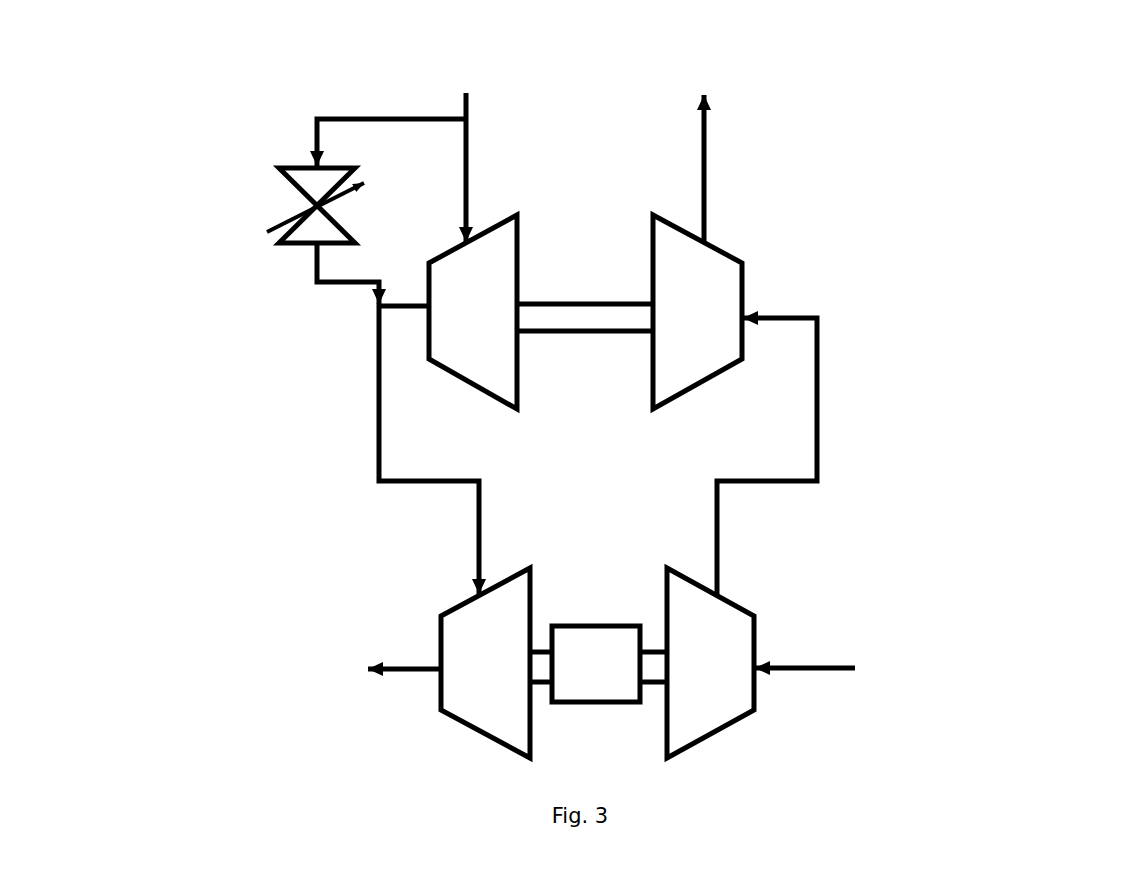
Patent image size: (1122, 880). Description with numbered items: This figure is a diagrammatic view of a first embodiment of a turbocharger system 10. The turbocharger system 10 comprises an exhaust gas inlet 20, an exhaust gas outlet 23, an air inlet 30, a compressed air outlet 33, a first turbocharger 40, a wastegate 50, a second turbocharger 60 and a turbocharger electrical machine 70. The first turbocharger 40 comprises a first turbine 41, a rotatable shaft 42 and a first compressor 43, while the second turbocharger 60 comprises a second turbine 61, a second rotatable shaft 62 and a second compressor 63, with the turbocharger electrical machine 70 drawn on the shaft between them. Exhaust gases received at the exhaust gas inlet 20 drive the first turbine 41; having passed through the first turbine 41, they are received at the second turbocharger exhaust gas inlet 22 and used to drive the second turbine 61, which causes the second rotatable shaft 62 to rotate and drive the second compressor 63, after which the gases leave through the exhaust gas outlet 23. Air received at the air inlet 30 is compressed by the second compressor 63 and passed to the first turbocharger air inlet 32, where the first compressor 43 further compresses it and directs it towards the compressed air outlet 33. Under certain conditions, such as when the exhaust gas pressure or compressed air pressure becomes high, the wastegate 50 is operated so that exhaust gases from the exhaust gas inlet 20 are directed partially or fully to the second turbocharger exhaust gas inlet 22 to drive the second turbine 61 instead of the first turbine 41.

The turbocharger system 10 is at (985, 207).
The exhaust gas inlet 20 is at (455, 143).
The second turbocharger exhaust gas inlet 22 is at (429, 450).
The exhaust gas outlet 23 is at (380, 652).
The air inlet 30 is at (828, 663).
The first turbocharger air inlet 32 is at (767, 457).
The compressed air outlet 33 is at (697, 143).
The first turbocharger 40 is at (782, 202).
The first turbine 41 is at (473, 312).
The rotatable shaft 42 is at (574, 293).
The first compressor 43 is at (697, 312).
The wastegate 50 is at (263, 194).
The second turbocharger 60 is at (793, 556).
The second turbine 61 is at (485, 663).
The second rotatable shaft 62 is at (655, 643).
The second compressor 63 is at (710, 663).
The turbocharger electrical machine 70 is at (596, 664).